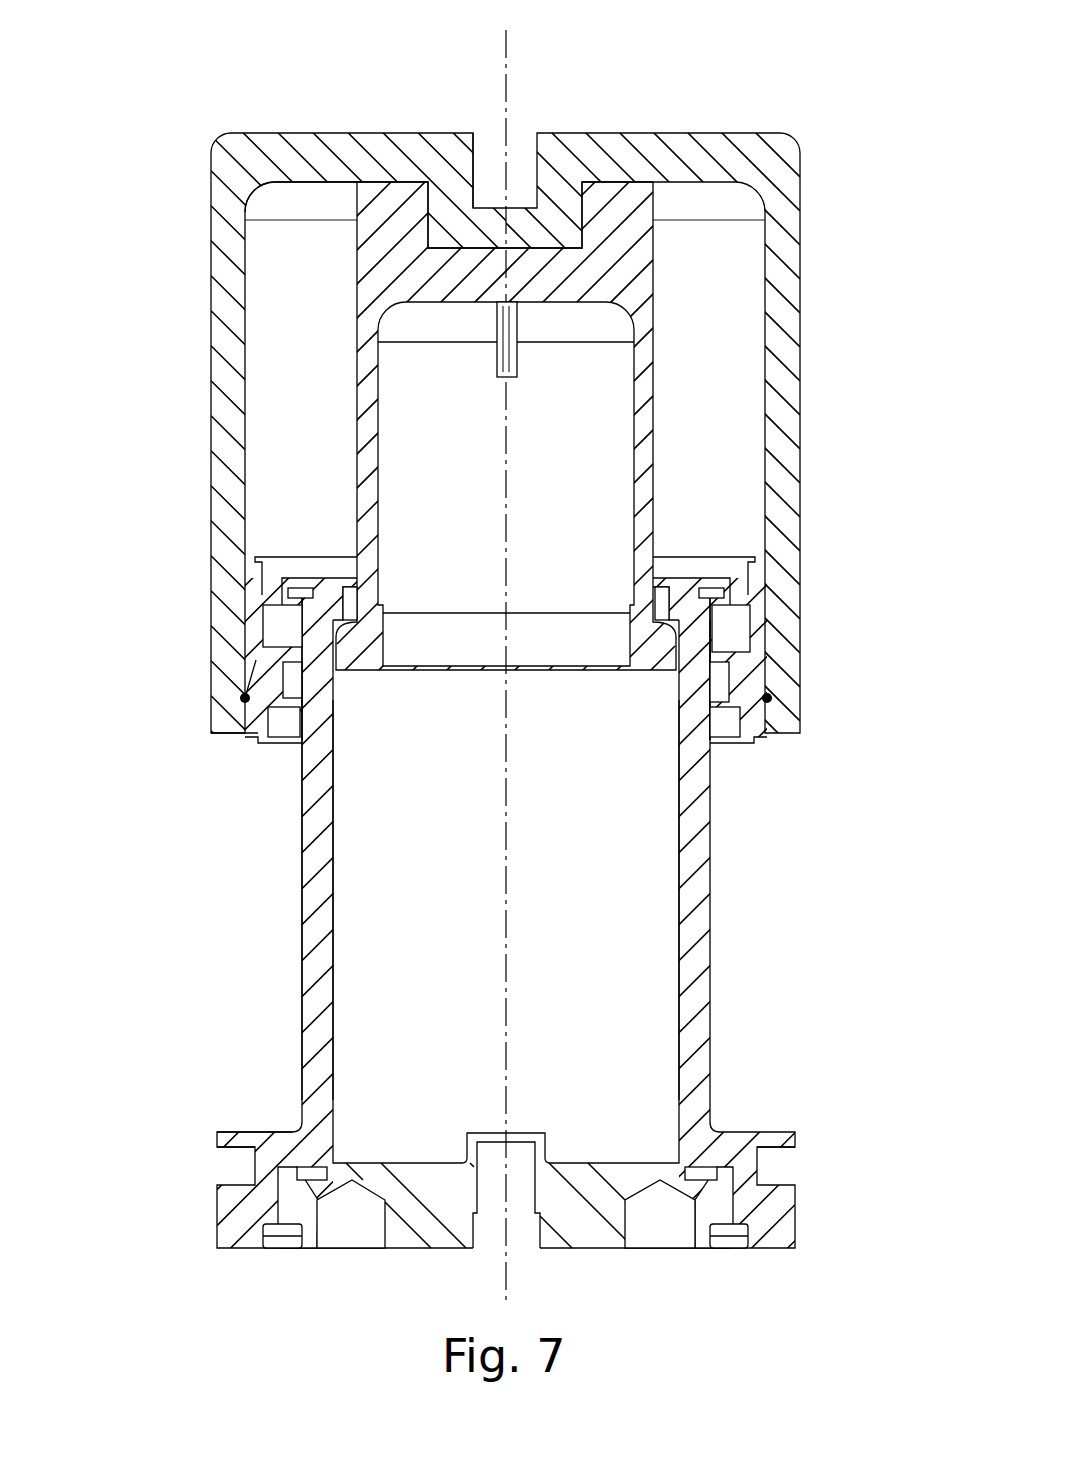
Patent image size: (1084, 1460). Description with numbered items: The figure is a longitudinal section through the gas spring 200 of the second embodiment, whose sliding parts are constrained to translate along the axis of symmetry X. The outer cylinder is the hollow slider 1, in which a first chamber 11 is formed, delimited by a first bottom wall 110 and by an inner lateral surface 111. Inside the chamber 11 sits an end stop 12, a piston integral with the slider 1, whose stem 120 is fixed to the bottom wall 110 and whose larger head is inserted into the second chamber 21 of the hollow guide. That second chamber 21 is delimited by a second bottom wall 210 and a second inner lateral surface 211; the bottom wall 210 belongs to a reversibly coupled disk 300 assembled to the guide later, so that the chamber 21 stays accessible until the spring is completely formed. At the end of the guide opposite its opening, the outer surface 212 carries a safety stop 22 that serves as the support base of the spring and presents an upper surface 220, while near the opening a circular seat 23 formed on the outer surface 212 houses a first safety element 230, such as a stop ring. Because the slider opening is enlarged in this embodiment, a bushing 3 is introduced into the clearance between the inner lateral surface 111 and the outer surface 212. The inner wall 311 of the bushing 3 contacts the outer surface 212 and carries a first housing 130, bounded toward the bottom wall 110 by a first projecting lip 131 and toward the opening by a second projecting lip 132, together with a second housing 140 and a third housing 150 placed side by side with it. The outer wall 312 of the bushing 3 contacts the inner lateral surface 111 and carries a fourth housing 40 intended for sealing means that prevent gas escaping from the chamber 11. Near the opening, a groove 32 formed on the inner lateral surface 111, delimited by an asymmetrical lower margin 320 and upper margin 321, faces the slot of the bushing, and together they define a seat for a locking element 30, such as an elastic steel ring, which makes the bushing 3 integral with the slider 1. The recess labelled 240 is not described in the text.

The spring 200 is at (159, 77).
The axis of symmetry X is at (507, 80).
The slider 1 is at (216, 268).
The first chamber 11 is at (727, 327).
The end stop 12 is at (655, 238).
The first bottom wall 110 is at (297, 192).
The inner lateral surface 111 is at (275, 361).
The stem 120 is at (670, 381).
The second chamber 21 is at (632, 918).
The safety stop 22 is at (200, 1156).
The circular seat 23 is at (721, 567).
The second bottom wall 210 is at (619, 1144).
The second inner lateral surface 211 is at (661, 817).
The outer surface 212 is at (286, 910).
The upper surface 220 is at (258, 1110).
The first safety element 230 is at (288, 592).
The recess 240 is at (352, 603).
The bushing 3 is at (247, 690).
The locking element 30 is at (247, 702).
The groove 32 is at (216, 693).
The fourth housing 40 is at (250, 578).
The first housing 130 is at (732, 626).
The first projecting profile or lip 131 is at (273, 618).
The second projecting profile or lip 132 is at (273, 645).
The second housing 140 is at (720, 680).
The third housing 150 is at (722, 718).
The reversibly coupled disk 300 is at (415, 1212).
The inner surface or wall 311 is at (323, 688).
The outer surface or wall 312 is at (752, 635).
The lower margin 320 is at (225, 718).
The upper margin 321 is at (225, 669).